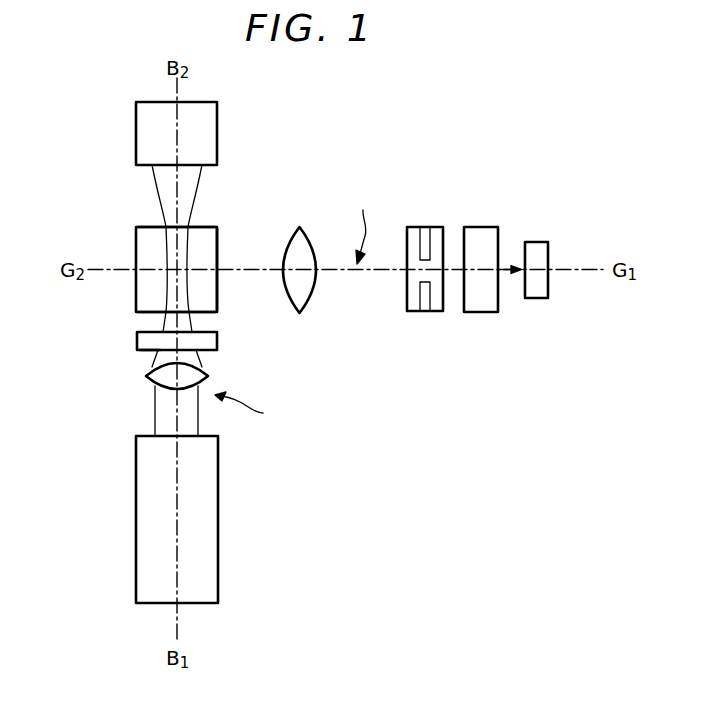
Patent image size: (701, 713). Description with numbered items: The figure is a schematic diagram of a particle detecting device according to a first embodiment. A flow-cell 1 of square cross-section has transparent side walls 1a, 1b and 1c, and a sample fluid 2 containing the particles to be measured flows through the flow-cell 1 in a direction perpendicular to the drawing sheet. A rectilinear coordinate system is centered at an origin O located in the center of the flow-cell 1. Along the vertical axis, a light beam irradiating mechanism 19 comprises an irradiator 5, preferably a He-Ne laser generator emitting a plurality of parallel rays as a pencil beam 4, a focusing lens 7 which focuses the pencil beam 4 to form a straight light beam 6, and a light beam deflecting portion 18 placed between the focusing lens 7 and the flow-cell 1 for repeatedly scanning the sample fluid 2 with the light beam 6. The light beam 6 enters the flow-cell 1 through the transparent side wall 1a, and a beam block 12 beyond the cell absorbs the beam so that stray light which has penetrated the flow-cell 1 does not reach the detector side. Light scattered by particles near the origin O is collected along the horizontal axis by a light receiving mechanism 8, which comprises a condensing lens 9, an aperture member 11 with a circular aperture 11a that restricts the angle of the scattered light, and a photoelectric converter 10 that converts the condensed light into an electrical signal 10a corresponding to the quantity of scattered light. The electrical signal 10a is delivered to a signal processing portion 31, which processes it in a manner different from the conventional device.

The flow-cell 1 is at (140, 238).
The transparent side wall 1a is at (148, 313).
The transparent side wall 1b is at (203, 227).
The transparent side wall 1c is at (218, 285).
The sample fluid 2 is at (150, 289).
The origin O is at (177, 270).
The pencil beam 4 is at (198, 420).
The irradiator 5 is at (203, 497).
The light beam 6 is at (193, 324).
The focusing lens 7 is at (208, 376).
The light receiving mechanism 8 is at (372, 205).
The condensing lens 9 is at (300, 227).
The photoelectric converter 10 is at (485, 227).
The electrical signal 10a is at (502, 273).
The aperture member 11 is at (398, 247).
The circular aperture 11a is at (417, 275).
The beam block 12 is at (213, 128).
The light beam deflecting portion 18 is at (150, 352).
The light beam irradiating mechanism 19 is at (290, 427).
The signal processing portion 31 is at (538, 242).